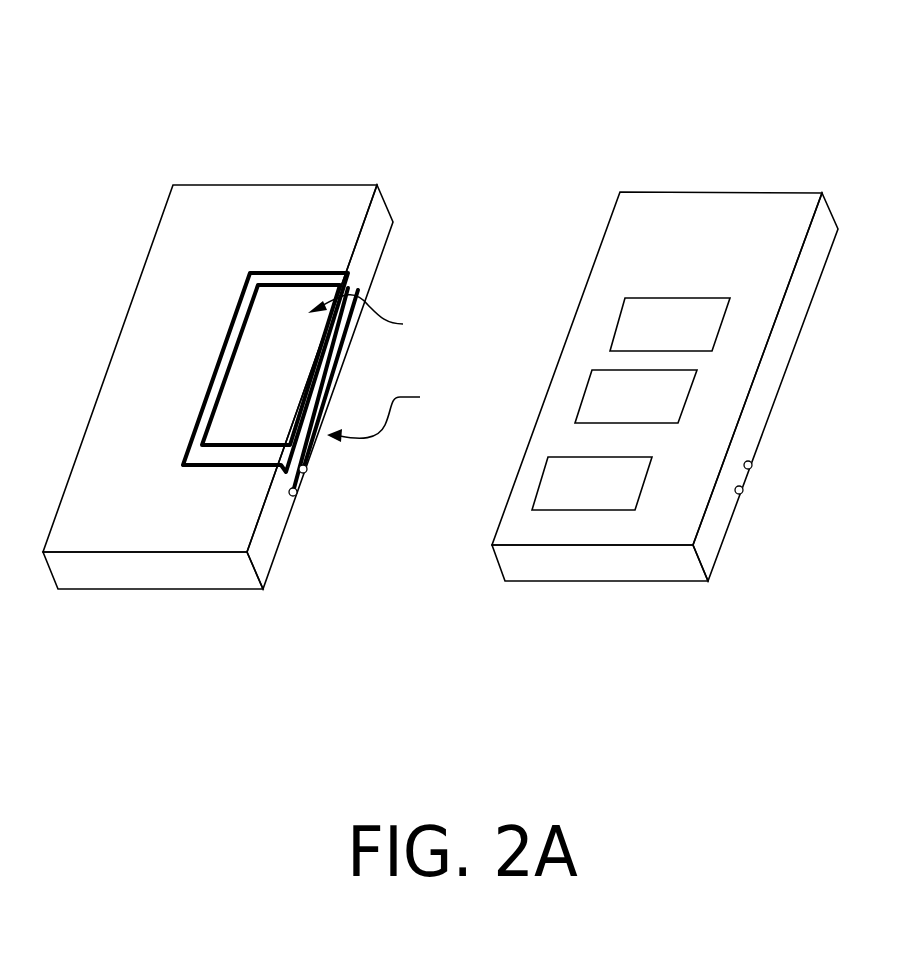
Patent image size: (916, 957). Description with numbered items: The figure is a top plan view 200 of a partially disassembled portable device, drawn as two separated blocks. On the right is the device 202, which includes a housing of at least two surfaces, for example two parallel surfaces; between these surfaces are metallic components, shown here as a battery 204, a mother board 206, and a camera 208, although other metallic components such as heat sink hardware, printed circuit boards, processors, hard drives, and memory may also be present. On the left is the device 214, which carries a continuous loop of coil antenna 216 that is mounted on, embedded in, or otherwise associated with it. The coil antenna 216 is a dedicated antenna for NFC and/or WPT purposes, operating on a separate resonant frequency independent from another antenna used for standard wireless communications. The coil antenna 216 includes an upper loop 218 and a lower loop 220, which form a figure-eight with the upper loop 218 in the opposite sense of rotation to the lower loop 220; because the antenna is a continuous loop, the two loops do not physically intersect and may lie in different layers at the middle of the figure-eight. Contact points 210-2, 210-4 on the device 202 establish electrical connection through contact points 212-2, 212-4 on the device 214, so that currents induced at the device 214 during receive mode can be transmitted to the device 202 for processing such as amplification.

The top plan view 200 is at (437, 79).
The device 202 is at (633, 191).
The battery 204 is at (618, 317).
The mother board 206 is at (585, 385).
The camera 208 is at (558, 456).
The contact point 210-2 is at (752, 463).
The contact point 210-4 is at (742, 494).
The contact point 212-2 is at (308, 466).
The contact point 212-4 is at (297, 496).
The device 214 is at (320, 185).
The coil antenna 216 is at (258, 272).
The upper loop 218 is at (377, 318).
The lower loop 220 is at (395, 416).